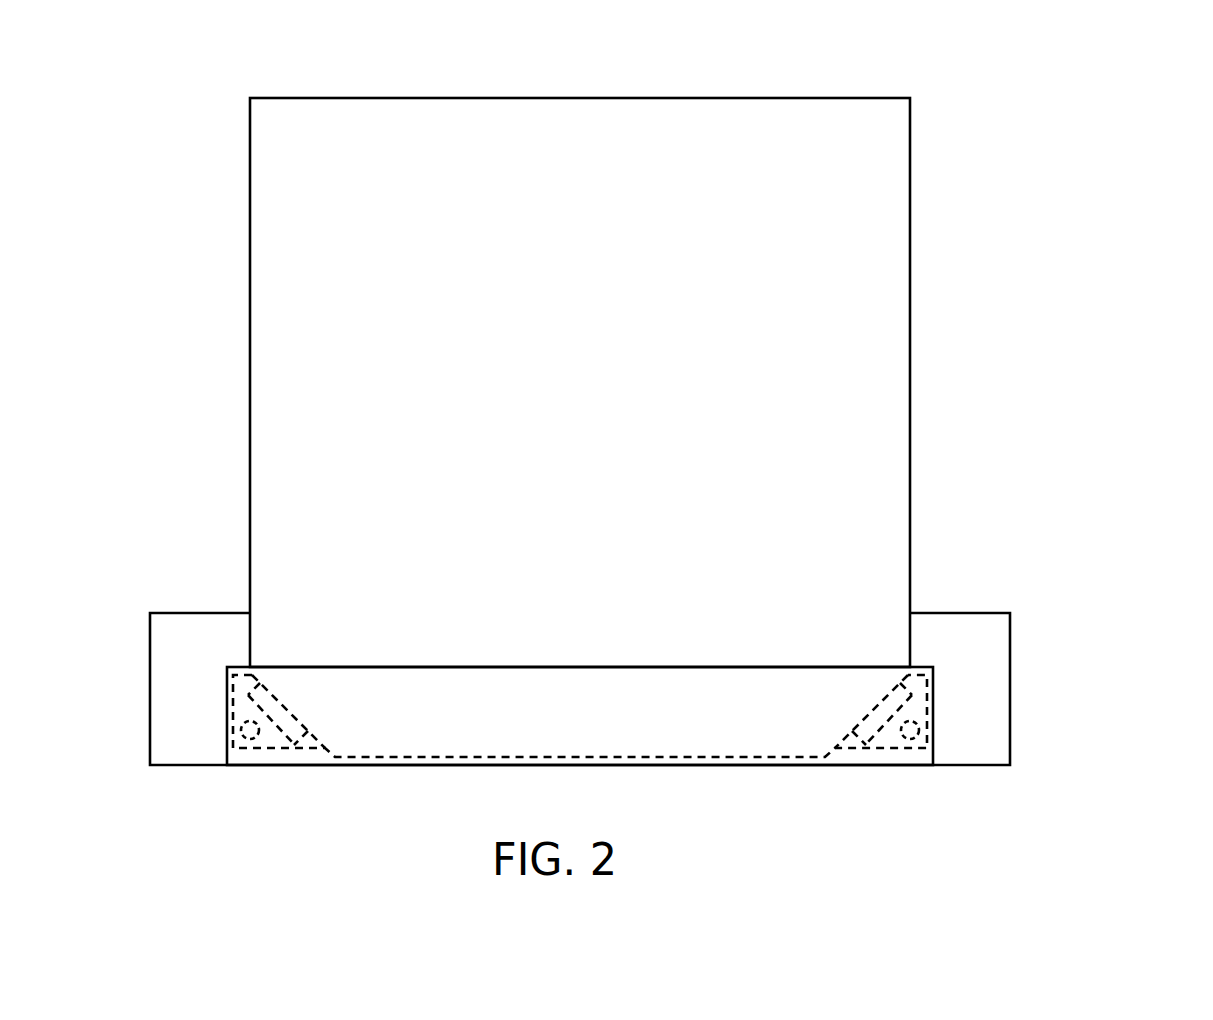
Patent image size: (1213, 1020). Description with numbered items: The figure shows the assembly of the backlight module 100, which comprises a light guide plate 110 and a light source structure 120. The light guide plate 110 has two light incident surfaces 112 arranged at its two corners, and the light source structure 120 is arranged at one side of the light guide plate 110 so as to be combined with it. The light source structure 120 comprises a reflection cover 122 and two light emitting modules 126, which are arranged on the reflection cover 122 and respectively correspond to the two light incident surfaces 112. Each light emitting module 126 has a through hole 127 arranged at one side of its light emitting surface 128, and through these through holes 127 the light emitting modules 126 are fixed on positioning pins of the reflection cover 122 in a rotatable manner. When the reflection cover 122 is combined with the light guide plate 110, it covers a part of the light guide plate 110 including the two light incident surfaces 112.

The backlight module 100 is at (163, 112).
The light guide plate 110 is at (903, 192).
The light incident surfaces 112 is at (322, 742).
The light source structure 120 is at (1030, 668).
The reflection cover 122 is at (977, 625).
The light emitting modules 126 is at (233, 717).
The through hole 127 is at (250, 740).
The light emitting surface 128 is at (293, 712).